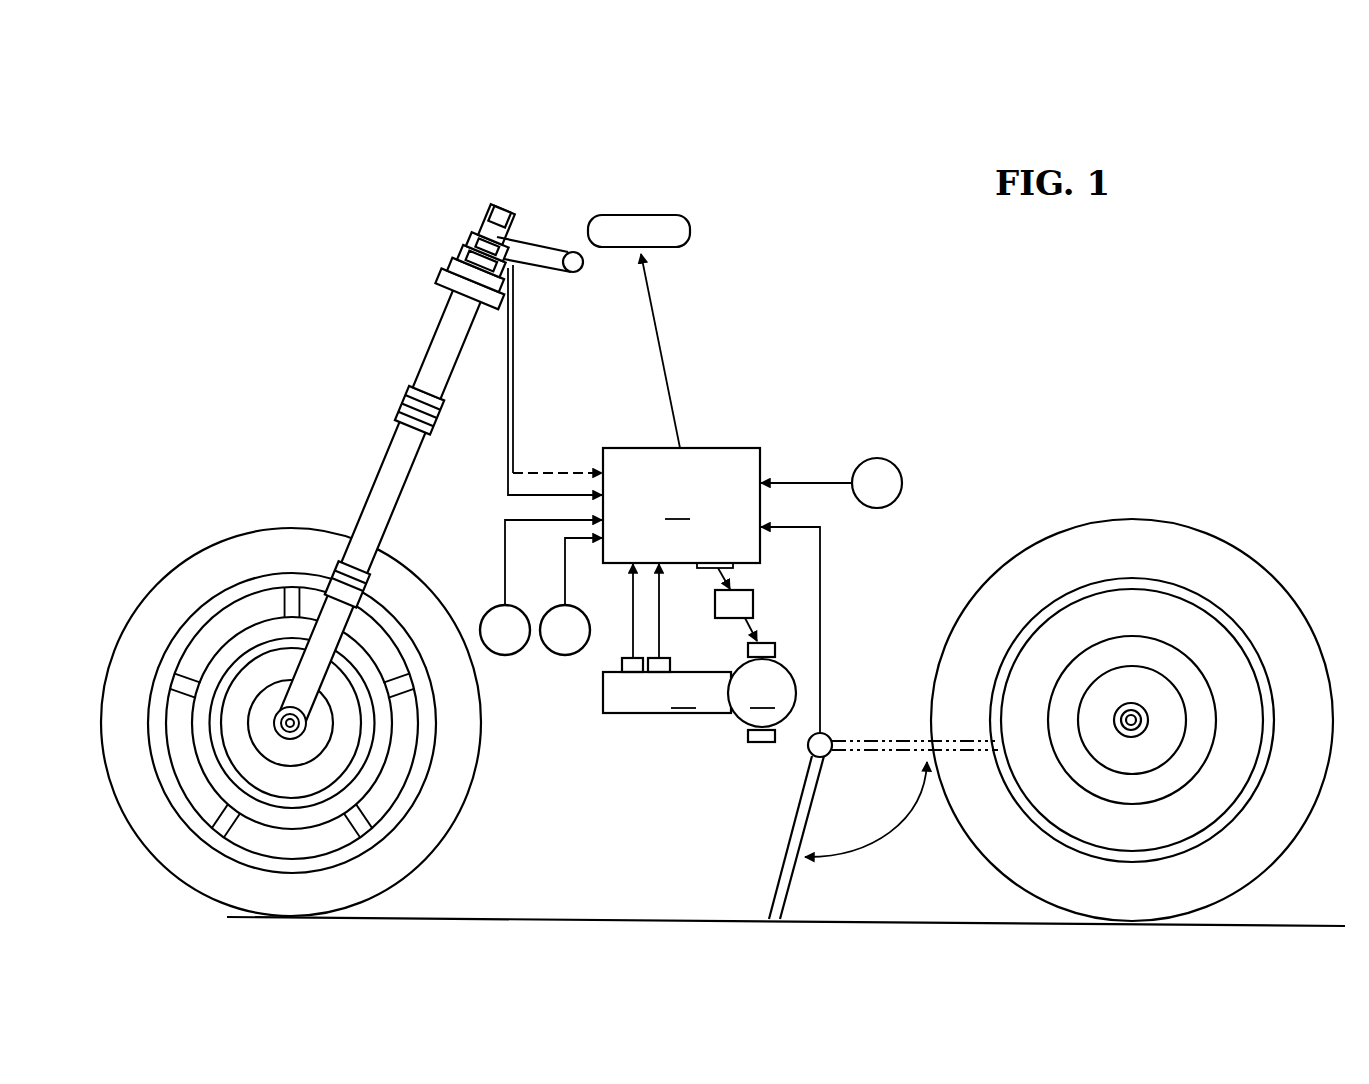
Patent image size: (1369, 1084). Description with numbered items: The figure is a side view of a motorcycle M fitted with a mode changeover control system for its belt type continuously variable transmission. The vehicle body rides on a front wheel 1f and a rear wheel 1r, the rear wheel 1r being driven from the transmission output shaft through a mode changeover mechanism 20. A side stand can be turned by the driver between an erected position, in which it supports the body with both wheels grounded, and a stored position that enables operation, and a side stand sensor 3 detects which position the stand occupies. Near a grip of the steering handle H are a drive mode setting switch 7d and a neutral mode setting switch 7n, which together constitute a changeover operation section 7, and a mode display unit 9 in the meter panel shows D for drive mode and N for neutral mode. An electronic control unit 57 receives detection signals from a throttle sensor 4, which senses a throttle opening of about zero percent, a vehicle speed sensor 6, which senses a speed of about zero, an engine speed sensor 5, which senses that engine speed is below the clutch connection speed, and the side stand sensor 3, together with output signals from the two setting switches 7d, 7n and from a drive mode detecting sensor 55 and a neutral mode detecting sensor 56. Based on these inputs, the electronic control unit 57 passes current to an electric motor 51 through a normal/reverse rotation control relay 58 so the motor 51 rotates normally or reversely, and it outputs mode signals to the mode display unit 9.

The front wheel 1f is at (282, 533).
The rear wheel 1r is at (1073, 533).
The side stand sensor 3 is at (831, 738).
The throttle sensor 4 is at (565, 655).
The engine speed sensor 5 is at (505, 655).
The vehicle speed sensor 6 is at (875, 459).
The changeover operation section 7 is at (435, 412).
The neutral mode setting switch 7n is at (487, 228).
The drive mode setting switch 7d is at (522, 210).
The mode display unit 9 is at (690, 233).
The mode changeover mechanism 20 is at (667, 692).
The electric motor 51 is at (762, 692).
The drive mode detecting sensor 55 is at (622, 668).
The neutral mode detecting sensor 56 is at (668, 668).
The electronic control unit 57 is at (678, 493).
The normal/reverse rotation control relay 58 is at (742, 608).
The steering handle H is at (540, 253).
The motorcycle M is at (785, 392).